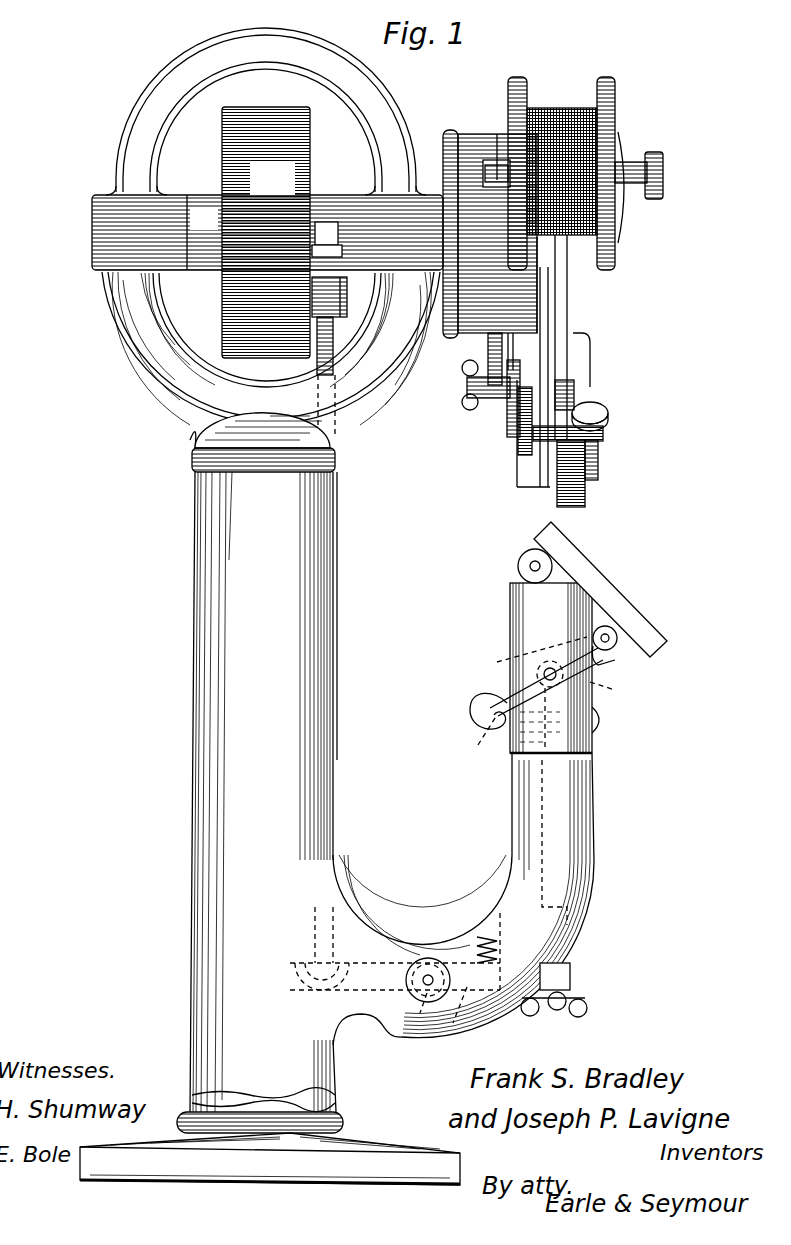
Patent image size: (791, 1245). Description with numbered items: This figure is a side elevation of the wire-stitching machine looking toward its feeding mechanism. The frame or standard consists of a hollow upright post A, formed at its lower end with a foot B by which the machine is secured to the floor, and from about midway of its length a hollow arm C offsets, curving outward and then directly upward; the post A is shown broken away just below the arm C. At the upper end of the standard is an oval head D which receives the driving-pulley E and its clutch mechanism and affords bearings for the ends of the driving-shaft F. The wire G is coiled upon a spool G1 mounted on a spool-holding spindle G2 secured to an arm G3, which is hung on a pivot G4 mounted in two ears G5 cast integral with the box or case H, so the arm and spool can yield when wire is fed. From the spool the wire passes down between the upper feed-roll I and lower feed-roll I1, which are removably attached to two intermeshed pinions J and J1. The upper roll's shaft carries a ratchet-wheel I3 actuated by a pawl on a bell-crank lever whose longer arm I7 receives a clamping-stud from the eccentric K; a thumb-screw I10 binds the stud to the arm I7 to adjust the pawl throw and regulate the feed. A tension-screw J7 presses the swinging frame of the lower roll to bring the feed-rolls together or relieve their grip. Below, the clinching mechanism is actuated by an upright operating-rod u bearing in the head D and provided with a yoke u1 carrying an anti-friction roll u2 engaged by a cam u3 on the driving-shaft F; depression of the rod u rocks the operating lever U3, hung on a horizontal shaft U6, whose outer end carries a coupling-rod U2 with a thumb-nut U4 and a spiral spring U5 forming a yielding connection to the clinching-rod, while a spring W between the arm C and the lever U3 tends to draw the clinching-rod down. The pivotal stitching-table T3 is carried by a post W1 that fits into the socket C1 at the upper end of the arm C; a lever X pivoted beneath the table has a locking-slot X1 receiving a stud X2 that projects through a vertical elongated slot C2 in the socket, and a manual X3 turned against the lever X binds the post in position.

The oval head D is at (266, 111).
The driving-pulley E is at (266, 232).
The driving-shaft F is at (267, 232).
The box or case H is at (490, 225).
The wire G is at (562, 171).
The spool G1 is at (616, 103).
The spool-holding spindle G2 is at (628, 165).
The arm G3 is at (500, 140).
The pivot G4 is at (483, 178).
The ears G5 is at (622, 235).
The eccentric K is at (488, 347).
The thumb-screw I10 is at (466, 404).
The longer arm of bell-crank lever I7 is at (507, 421).
The ratchet-wheel I3 is at (518, 445).
The upper feed-roll I is at (580, 395).
The pinion J is at (576, 382).
The tension-screw J7 is at (610, 410).
The lower feed-roll I1 is at (586, 485).
The pinion J1 is at (588, 500).
The upright operating-rod u is at (339, 520).
The yoke u1 is at (348, 297).
The anti-friction roll u2 is at (339, 237).
The cam u3 is at (327, 259).
The hollow upright post A is at (263, 792).
The foot B is at (270, 1148).
The hollow arm C is at (520, 792).
The post W1 is at (554, 668).
The pivotal stitching-table T3 is at (592, 589).
The lever X is at (616, 649).
The socket C1 is at (612, 668).
The stud X2 is at (529, 662).
The manual X3 is at (612, 694).
The vertical elongated slot C2 is at (467, 713).
The locking-slot X1 is at (502, 727).
The horizontal shaft U6 is at (395, 986).
The spiral spring U5 is at (503, 940).
The coupling-rod U2 is at (572, 933).
The thumb-nut U4 is at (590, 1002).
The operating lever U3 is at (448, 1046).
The spring W is at (502, 1033).